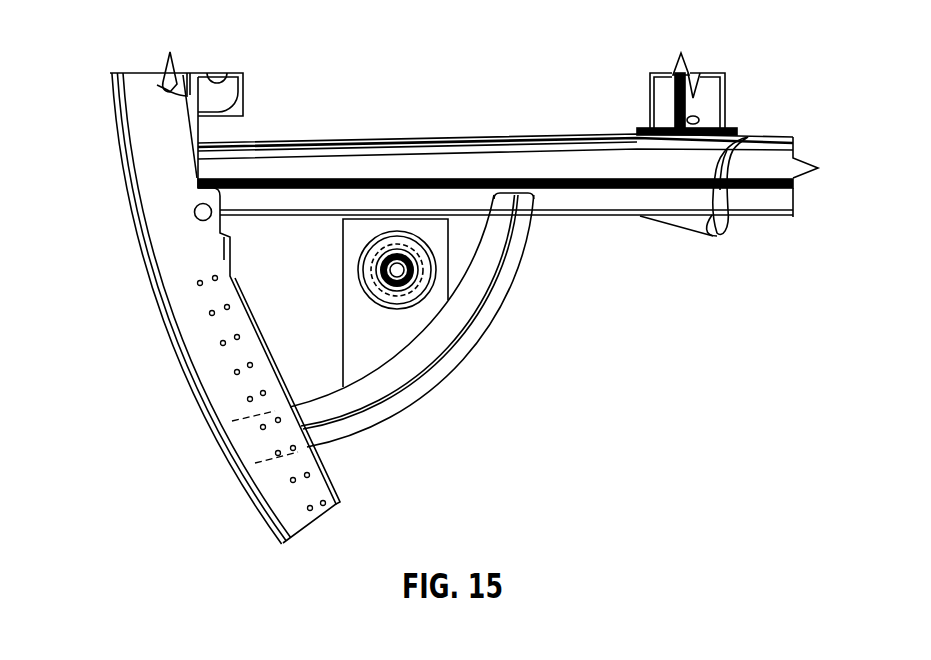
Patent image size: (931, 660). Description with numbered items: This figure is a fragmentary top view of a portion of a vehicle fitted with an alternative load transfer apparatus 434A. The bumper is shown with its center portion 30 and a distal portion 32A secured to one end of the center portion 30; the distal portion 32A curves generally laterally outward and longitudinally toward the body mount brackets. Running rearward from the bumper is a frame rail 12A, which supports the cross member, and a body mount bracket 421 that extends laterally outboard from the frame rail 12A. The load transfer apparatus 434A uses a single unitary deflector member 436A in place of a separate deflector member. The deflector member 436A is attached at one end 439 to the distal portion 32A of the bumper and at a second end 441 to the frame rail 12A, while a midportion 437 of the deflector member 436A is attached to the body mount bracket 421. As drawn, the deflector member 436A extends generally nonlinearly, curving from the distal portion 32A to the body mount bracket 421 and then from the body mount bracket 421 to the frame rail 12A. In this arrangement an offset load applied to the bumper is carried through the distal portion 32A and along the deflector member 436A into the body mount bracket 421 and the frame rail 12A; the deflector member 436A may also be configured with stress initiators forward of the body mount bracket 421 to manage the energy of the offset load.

The center portion 30 is at (198, 298).
The distal portion 32A is at (193, 377).
The one end 439 is at (222, 441).
The body mount bracket 421 is at (353, 318).
The second end 441 is at (537, 217).
The frame rail 12A is at (608, 203).
The unitary deflector member 436A is at (478, 337).
The midportion 437 is at (407, 393).
The load transfer apparatus 434A is at (437, 332).